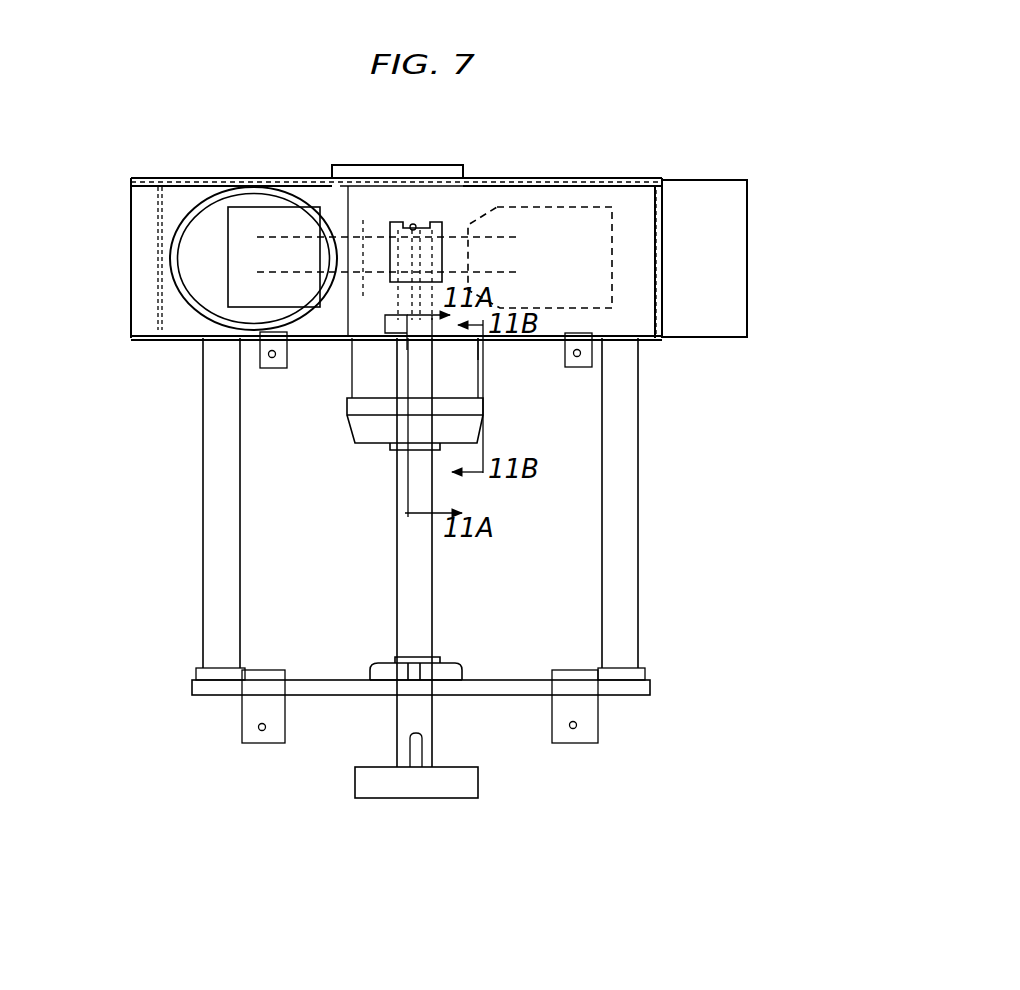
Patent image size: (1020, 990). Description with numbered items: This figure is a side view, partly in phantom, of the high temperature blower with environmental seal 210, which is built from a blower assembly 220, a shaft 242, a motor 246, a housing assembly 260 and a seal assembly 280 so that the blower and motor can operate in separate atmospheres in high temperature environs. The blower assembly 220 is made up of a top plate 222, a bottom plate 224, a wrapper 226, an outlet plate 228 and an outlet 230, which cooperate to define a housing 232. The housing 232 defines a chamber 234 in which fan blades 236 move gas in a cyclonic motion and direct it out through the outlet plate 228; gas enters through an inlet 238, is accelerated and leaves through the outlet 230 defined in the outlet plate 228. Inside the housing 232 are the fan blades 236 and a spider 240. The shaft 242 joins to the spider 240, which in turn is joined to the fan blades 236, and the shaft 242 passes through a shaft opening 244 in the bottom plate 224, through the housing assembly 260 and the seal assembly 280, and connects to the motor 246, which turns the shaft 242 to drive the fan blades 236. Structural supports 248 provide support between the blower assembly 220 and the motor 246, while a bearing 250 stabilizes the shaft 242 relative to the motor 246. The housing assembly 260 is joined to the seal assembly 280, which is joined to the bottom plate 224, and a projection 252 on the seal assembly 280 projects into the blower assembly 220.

The high temperature blower with environmental seal 210 is at (770, 160).
The blower assembly 220 is at (603, 177).
The top plate 222 is at (556, 177).
The bottom plate 224 is at (668, 344).
The wrapper 226 is at (665, 220).
The outlet plate 228 is at (132, 202).
The outlet 230 is at (207, 225).
The housing 232 is at (511, 176).
The chamber 234 is at (187, 272).
The fan blades 236 is at (290, 269).
The inlet 238 is at (433, 167).
The spider 240 is at (375, 238).
The shaft 242 is at (428, 548).
The shaft opening 244 is at (433, 342).
The motor 246 is at (417, 793).
The structural supports 248 is at (272, 368).
The bearing 250 is at (380, 658).
The projection 252 is at (383, 343).
The housing assembly 260 is at (375, 430).
The seal assembly 280 is at (487, 338).